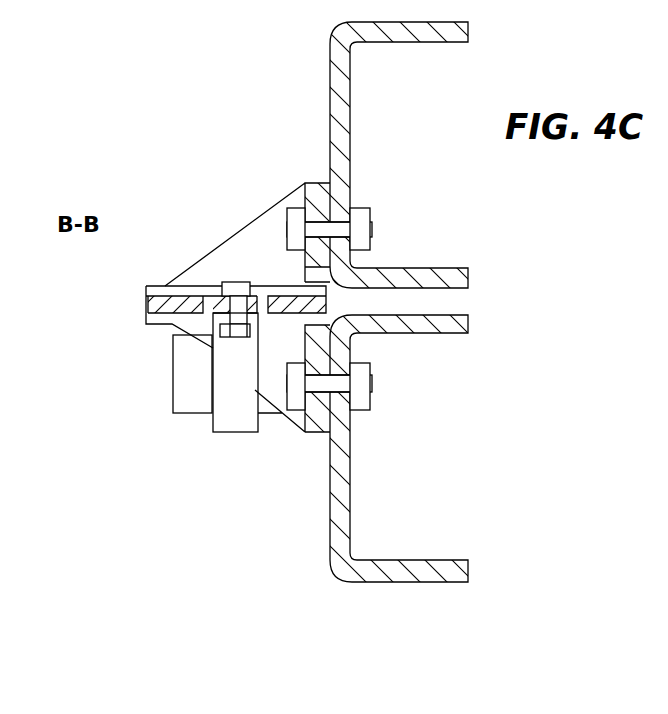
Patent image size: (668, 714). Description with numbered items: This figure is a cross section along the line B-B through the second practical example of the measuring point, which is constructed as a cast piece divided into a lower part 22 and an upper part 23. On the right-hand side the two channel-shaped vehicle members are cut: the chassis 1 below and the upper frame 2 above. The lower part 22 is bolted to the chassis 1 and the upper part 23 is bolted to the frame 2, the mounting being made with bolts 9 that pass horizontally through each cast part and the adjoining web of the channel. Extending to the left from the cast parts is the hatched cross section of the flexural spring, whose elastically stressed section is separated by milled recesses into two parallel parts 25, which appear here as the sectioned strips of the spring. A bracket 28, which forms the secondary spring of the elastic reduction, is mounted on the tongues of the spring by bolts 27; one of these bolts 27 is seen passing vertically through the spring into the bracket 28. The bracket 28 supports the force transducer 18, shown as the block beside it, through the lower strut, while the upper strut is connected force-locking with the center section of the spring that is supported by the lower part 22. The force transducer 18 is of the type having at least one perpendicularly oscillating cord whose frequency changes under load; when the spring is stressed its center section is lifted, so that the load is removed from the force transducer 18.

The chassis 1 is at (337, 532).
The upper frame 2 is at (335, 68).
The bolts 9 is at (472, 402).
The force transducer 18 is at (193, 387).
The lower part 22 is at (277, 372).
The upper part 23 is at (275, 232).
The parallel parts 25 is at (287, 295).
The bolts 27 is at (218, 322).
The bracket 28 is at (237, 388).